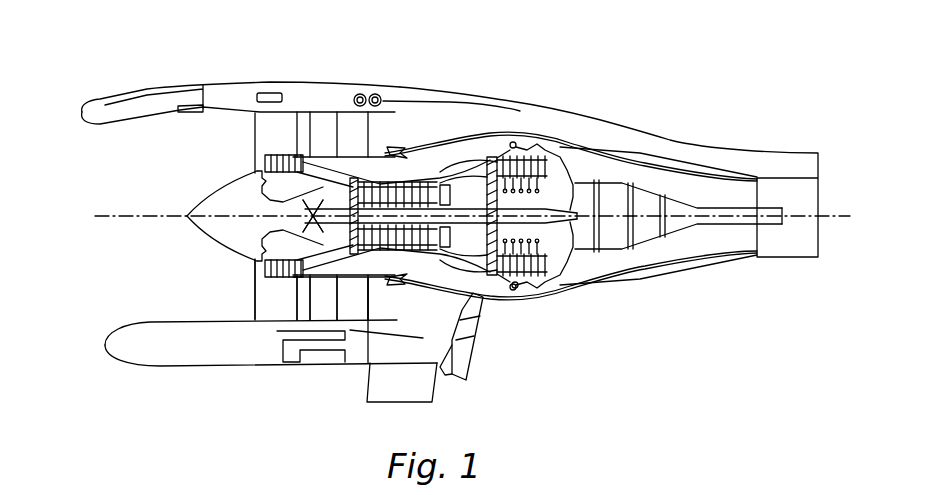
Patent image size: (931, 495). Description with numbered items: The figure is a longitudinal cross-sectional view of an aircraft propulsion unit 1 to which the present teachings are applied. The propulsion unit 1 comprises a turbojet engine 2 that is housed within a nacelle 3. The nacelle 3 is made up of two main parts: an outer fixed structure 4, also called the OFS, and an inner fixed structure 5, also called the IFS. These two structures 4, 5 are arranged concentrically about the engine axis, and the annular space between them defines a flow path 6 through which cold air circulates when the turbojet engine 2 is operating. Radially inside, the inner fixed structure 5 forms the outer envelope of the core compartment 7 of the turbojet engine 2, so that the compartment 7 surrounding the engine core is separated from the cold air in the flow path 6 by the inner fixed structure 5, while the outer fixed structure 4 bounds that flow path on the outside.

The aircraft propulsion unit 1 is at (633, 116).
The turbojet engine 2 is at (350, 322).
The nacelle 3 is at (233, 83).
The outer fixed structure 4 is at (413, 100).
The inner fixed structure 5 is at (534, 128).
The flow path 6 is at (360, 137).
The core compartment 7 is at (460, 163).